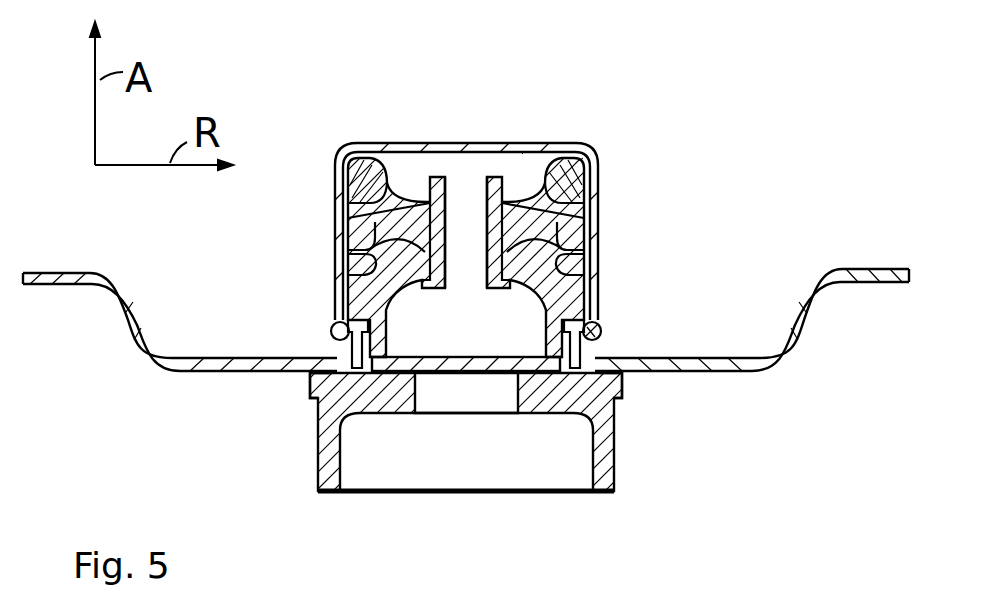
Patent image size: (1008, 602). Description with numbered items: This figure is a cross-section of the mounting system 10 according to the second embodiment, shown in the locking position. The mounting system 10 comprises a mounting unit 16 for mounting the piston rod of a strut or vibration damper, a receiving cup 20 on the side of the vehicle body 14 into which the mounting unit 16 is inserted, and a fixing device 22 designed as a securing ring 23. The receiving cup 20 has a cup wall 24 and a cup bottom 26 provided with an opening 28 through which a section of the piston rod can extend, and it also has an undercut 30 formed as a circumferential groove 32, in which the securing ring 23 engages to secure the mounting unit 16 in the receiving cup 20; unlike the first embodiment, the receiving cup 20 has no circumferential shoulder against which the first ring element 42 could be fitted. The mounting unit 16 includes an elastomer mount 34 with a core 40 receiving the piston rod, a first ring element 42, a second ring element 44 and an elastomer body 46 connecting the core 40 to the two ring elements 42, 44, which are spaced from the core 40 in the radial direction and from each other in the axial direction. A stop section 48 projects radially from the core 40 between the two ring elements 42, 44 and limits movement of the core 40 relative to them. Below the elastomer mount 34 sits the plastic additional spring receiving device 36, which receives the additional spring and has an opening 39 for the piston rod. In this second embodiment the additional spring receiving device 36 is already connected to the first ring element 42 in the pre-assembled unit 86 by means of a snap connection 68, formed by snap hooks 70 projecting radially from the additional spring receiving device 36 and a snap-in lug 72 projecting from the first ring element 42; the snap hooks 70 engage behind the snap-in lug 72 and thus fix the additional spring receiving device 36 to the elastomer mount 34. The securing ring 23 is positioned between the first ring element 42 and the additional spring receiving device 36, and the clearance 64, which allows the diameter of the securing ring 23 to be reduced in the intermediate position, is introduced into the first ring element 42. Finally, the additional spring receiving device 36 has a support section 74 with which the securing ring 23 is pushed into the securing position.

The mounting system 10 is at (495, 283).
The vehicle body 14 is at (824, 268).
The mounting unit 16 is at (495, 302).
The receiving cup 20 is at (358, 147).
The fixing device 22 is at (598, 312).
The securing ring 23 is at (601, 329).
The cup wall 24 is at (598, 262).
The cup bottom 26 is at (386, 155).
The opening 28 is at (505, 152).
The undercut 30 is at (348, 322).
The circumferential groove 32 is at (331, 331).
The elastomer mount 34 is at (410, 177).
The additional spring receiving device 36 is at (495, 339).
The opening 39 is at (513, 393).
The core 40 is at (522, 154).
The first ring element 42 is at (599, 275).
The second ring element 44 is at (584, 158).
The elastomer body 46 is at (348, 178).
The stop section 48 is at (597, 228).
The clearance 64 is at (365, 332).
The snap connection 68 is at (388, 320).
The snap hooks 70 is at (614, 396).
The snap-in lug 72 is at (395, 347).
The support section 74 is at (315, 398).
The pre-assembled unit 86 is at (519, 331).